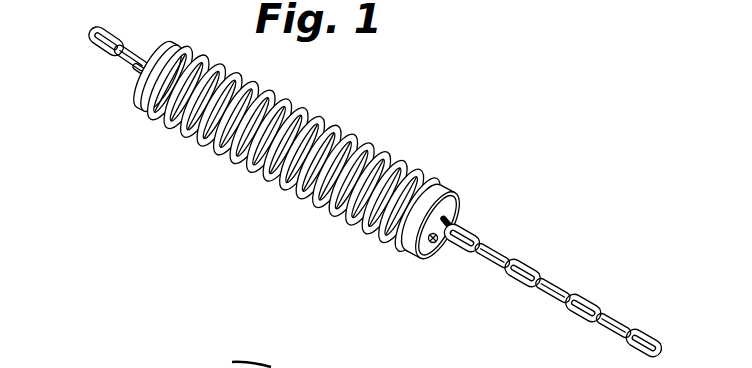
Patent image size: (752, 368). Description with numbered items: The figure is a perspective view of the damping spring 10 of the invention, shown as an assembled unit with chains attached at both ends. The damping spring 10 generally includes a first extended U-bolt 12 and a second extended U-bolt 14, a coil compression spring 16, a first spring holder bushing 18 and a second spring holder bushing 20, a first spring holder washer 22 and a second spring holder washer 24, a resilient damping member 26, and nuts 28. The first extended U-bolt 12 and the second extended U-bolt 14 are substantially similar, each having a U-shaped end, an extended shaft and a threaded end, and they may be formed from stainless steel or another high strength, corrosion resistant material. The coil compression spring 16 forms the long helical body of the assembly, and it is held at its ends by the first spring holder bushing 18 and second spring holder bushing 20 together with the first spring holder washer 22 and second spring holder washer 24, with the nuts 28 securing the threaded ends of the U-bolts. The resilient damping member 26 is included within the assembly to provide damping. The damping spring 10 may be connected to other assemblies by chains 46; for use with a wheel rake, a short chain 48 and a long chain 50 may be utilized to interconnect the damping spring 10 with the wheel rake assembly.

The damping spring 10 is at (437, 133).
The first extended U-bolt 12 is at (455, 233).
The second extended U-bolt 14 is at (156, 53).
The coil compression spring 16 is at (305, 128).
The first spring holder bushing 18 is at (432, 196).
The second spring holder bushing 20 is at (148, 76).
The first spring holder washer 22 is at (448, 214).
The second spring holder washer 24 is at (163, 50).
The resilient damping member 26 is at (268, 106).
The nuts 28 is at (432, 242).
The chains 46 is at (348, 163).
The short chain 48 is at (95, 44).
The long chain 50 is at (564, 267).